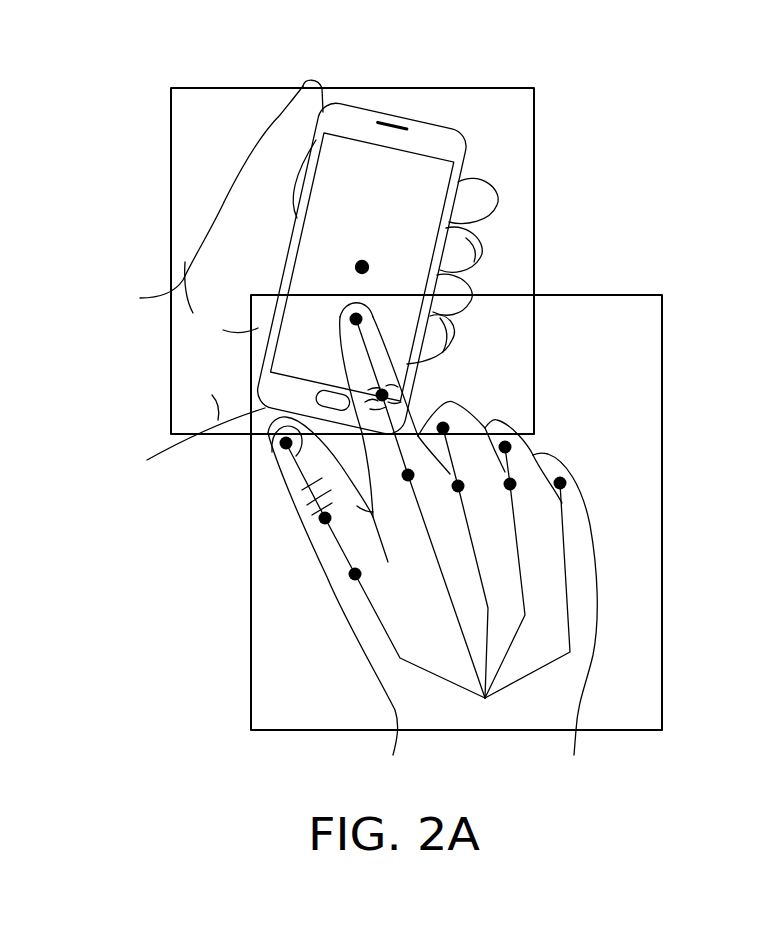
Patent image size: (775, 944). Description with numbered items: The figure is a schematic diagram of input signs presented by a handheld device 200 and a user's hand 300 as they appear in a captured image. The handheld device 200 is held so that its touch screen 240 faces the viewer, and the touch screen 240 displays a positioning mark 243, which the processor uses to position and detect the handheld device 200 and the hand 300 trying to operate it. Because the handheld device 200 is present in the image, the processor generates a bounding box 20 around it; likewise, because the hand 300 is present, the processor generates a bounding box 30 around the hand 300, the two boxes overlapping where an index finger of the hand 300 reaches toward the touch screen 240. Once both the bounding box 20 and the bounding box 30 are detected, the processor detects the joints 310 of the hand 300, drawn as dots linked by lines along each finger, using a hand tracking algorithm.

The bounding box 20 is at (169, 110).
The handheld device 200 is at (392, 113).
The touch screen 240 is at (428, 180).
The positioning mark 243 is at (363, 260).
The bounding box 30 is at (250, 576).
The hand 300 is at (581, 691).
The joints 310 is at (349, 578).